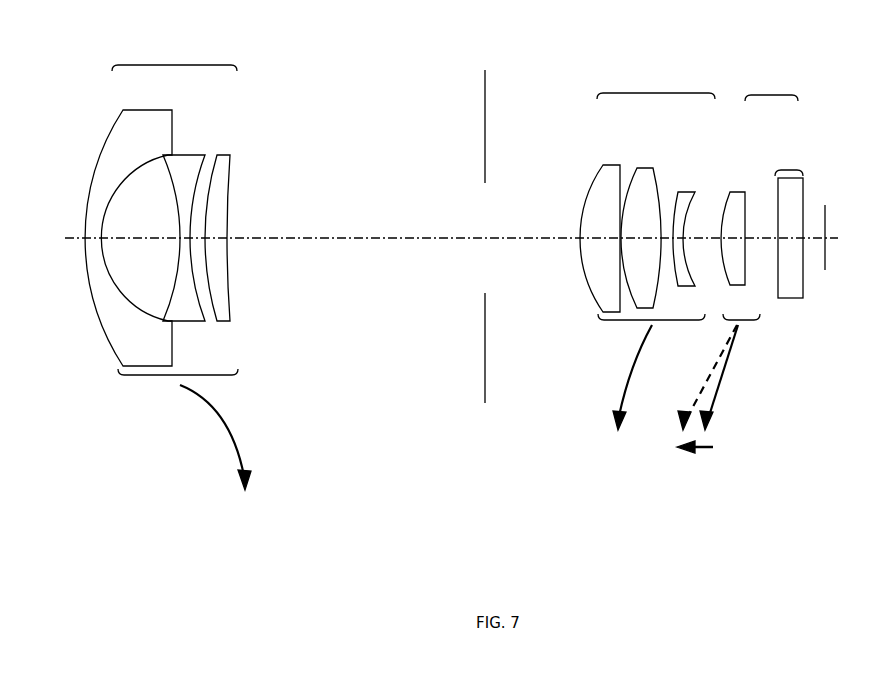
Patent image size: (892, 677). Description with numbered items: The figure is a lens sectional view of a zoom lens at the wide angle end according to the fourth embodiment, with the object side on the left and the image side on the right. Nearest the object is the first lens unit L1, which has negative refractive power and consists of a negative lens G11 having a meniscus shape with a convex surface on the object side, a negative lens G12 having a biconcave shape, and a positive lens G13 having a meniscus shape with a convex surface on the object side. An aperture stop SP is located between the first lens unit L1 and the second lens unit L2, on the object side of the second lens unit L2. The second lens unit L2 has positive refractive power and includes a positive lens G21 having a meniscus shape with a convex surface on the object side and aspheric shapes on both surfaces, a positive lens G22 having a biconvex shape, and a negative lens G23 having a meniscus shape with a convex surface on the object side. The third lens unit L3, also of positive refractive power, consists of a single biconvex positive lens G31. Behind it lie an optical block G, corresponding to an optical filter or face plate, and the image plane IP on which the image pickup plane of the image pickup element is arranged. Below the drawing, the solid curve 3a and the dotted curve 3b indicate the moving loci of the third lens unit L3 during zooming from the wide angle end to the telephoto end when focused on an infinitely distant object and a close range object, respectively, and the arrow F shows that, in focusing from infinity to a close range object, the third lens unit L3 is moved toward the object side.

The first lens unit L1 is at (168, 265).
The negative lens G11 is at (150, 123).
The negative lens G12 is at (182, 163).
The positive lens G13 is at (218, 157).
The aperture stop SP is at (485, 70).
The second lens unit L2 is at (648, 249).
The positive lens G21 is at (605, 178).
The positive lens G22 is at (647, 185).
The negative lens G23 is at (682, 190).
The third lens unit L3 is at (759, 194).
The positive lens G31 is at (738, 197).
The optical block G is at (789, 220).
The image plane IP is at (826, 204).
The curve (solid line) 3a is at (719, 377).
The curve (dotted line) 3b is at (702, 377).
The arrow F is at (695, 457).